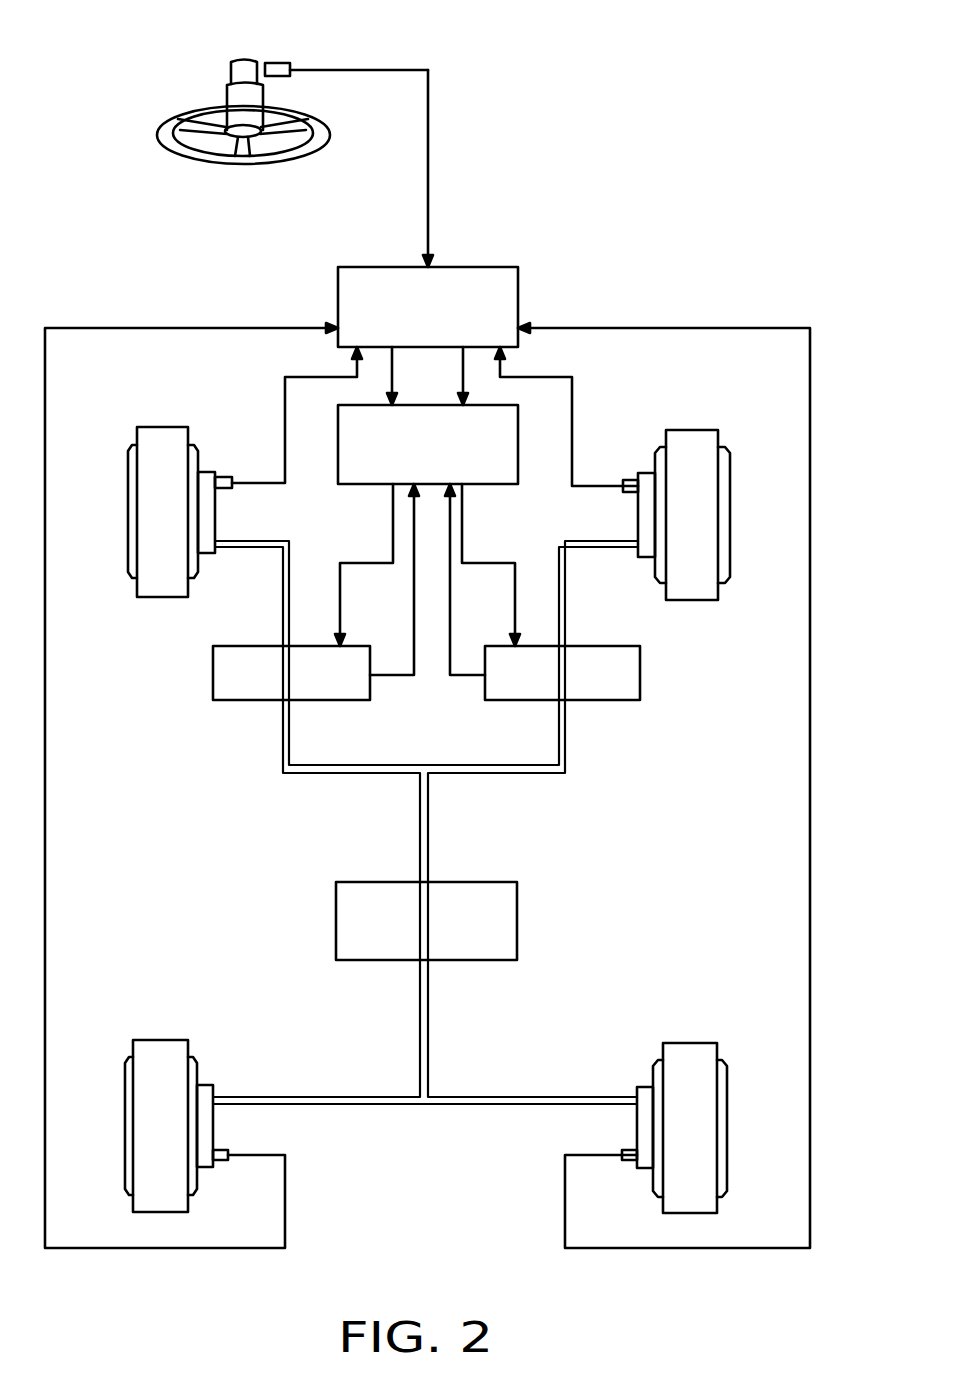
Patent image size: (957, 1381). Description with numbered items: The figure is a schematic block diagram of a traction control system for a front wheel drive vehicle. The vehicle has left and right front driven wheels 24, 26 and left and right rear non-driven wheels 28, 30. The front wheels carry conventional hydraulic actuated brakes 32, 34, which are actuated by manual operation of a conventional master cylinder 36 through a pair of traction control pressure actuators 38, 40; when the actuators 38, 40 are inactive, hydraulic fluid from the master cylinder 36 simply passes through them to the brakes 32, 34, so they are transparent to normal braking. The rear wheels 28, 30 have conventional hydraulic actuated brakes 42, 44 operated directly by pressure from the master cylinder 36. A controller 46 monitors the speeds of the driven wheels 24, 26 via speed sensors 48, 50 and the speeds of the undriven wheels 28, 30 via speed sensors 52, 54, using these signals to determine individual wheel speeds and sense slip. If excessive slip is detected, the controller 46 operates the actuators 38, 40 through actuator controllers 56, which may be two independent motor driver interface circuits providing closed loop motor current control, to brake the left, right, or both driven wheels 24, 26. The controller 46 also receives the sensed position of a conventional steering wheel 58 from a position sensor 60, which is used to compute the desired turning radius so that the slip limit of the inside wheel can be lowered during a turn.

The left front driven wheel 24 is at (157, 427).
The right front driven wheel 26 is at (683, 437).
The left rear non-driven wheel 28 is at (182, 1053).
The right rear non-driven wheel 30 is at (690, 1070).
The hydraulic actuated brake 32 is at (217, 527).
The hydraulic actuated brake 34 is at (648, 523).
The master cylinder 36 is at (477, 897).
The traction control pressure actuator 38 is at (221, 692).
The traction control pressure actuator 40 is at (633, 690).
The hydraulic actuated brake 42 is at (205, 1134).
The hydraulic actuated brake 44 is at (645, 1123).
The controller 46 is at (514, 287).
The speed sensor 48 is at (223, 478).
The speed sensor 50 is at (636, 480).
The speed sensor 52 is at (218, 1160).
The speed sensor 54 is at (628, 1160).
The actuator controllers 56 is at (350, 440).
The steering wheel 58 is at (197, 107).
The position sensor 60 is at (278, 62).